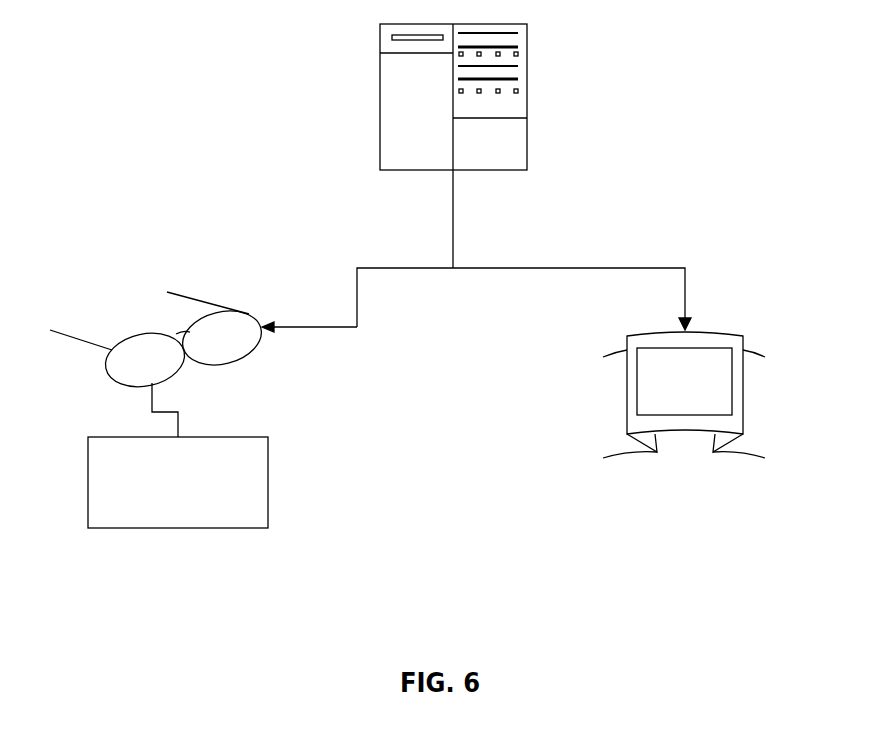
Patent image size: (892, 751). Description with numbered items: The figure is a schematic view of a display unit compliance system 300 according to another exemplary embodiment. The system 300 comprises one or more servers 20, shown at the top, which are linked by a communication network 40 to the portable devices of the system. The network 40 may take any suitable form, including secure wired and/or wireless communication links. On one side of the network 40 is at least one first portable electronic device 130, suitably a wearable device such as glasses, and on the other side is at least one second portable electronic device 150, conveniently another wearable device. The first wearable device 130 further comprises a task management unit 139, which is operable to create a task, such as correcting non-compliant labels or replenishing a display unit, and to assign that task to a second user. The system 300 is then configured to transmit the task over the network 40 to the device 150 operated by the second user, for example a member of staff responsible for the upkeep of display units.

The display unit compliance system 300 is at (728, 107).
The server 20 is at (530, 110).
The communication network 40 is at (492, 268).
The first portable electronic device 130 is at (240, 358).
The task management unit 139 is at (268, 469).
The second portable electronic device 150 is at (760, 415).